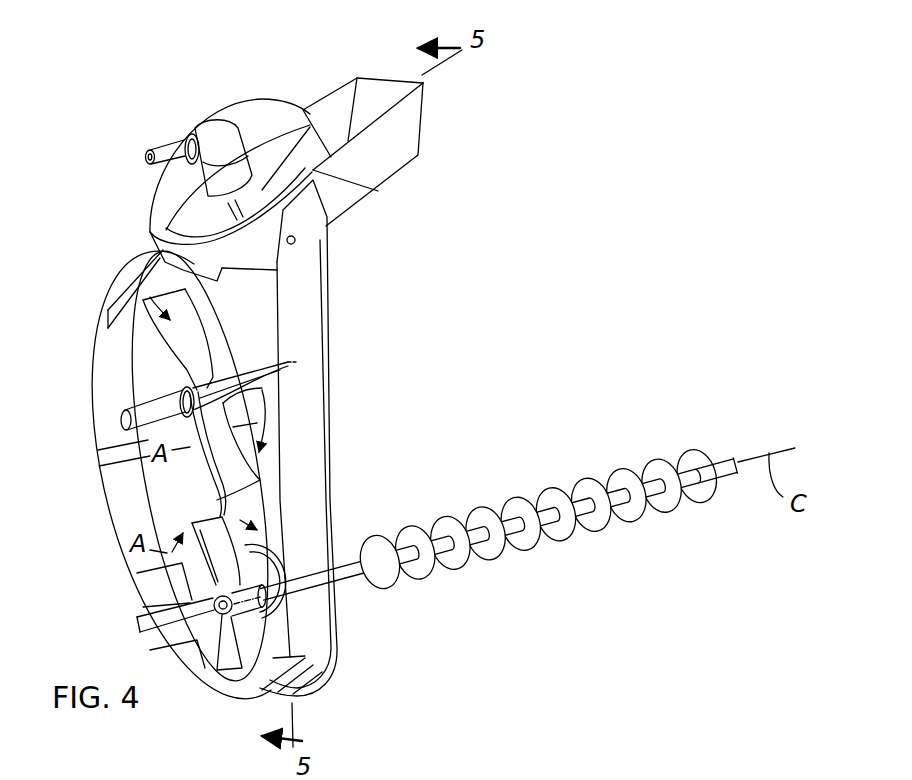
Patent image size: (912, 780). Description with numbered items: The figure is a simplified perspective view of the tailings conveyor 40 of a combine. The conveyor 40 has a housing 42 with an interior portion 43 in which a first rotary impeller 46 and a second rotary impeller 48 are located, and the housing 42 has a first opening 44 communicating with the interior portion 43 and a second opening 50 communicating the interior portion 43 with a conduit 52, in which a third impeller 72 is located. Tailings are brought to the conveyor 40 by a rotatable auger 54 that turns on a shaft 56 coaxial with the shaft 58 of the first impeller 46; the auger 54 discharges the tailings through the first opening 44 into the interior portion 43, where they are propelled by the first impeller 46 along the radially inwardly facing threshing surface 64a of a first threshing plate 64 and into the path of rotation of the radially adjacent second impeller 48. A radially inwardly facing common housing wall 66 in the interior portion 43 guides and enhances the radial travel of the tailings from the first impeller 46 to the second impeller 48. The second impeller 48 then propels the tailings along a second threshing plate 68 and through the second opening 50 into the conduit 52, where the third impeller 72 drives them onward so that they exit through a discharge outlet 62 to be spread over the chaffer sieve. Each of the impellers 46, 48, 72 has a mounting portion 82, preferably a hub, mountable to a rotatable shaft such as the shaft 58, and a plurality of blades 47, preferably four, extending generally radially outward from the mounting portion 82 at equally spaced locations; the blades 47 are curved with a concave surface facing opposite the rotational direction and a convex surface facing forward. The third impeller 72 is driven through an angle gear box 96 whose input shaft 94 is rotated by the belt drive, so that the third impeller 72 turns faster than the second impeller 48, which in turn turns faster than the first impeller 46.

The tailings conveyor 40 is at (310, 84).
The housing 42 is at (310, 312).
The interior portion 43 is at (127, 503).
The first opening 44 is at (250, 540).
The first rotary impeller 46 is at (287, 658).
The blades 47 is at (150, 272).
The second rotary impeller 48 is at (150, 297).
The second opening 50 is at (270, 278).
The conduit 52 is at (407, 143).
The auger 54 is at (520, 548).
The shaft 56 is at (727, 485).
The shaft 58 is at (173, 592).
The discharge outlet 62 is at (386, 90).
The first threshing plate 64 is at (167, 617).
The threshing surface 64a is at (163, 603).
The common housing wall 66 is at (130, 494).
The second threshing plate 68 is at (98, 350).
The third impeller 72 is at (271, 150).
The mounting portion 82 is at (378, 191).
The input shaft 94 is at (153, 152).
The angle gear box 96 is at (192, 137).